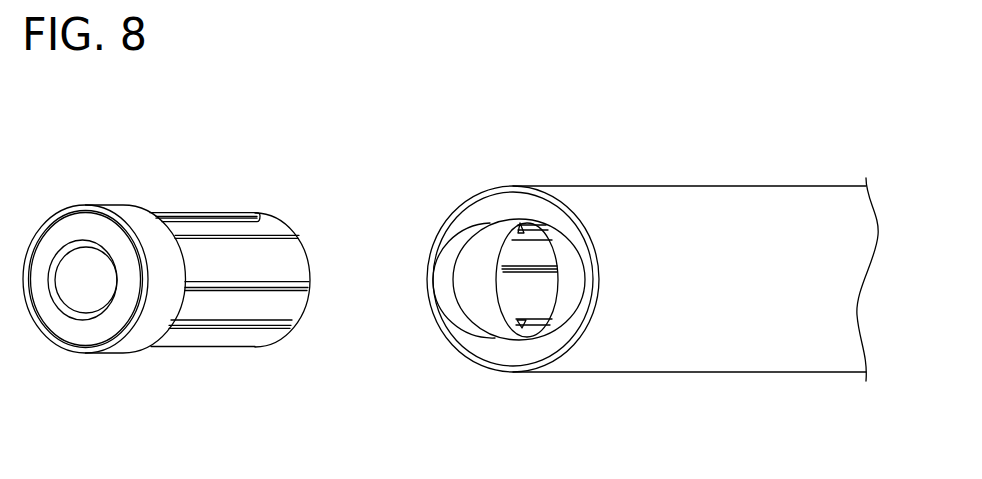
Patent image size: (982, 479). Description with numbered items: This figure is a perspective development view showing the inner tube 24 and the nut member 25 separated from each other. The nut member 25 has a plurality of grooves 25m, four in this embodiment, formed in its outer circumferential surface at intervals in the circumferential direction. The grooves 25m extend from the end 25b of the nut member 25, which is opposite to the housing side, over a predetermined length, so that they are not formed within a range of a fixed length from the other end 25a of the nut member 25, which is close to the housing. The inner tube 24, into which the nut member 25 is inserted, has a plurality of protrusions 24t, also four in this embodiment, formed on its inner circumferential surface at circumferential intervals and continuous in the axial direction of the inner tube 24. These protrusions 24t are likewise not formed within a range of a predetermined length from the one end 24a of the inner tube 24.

The inner tube 24 is at (652, 260).
The one end of the inner tube 24a is at (513, 202).
The protrusions 24t is at (510, 248).
The nut member 25 is at (198, 274).
The end of the nut member 25a is at (82, 332).
The end of the nut member 25b is at (287, 333).
The grooves 25m is at (263, 237).